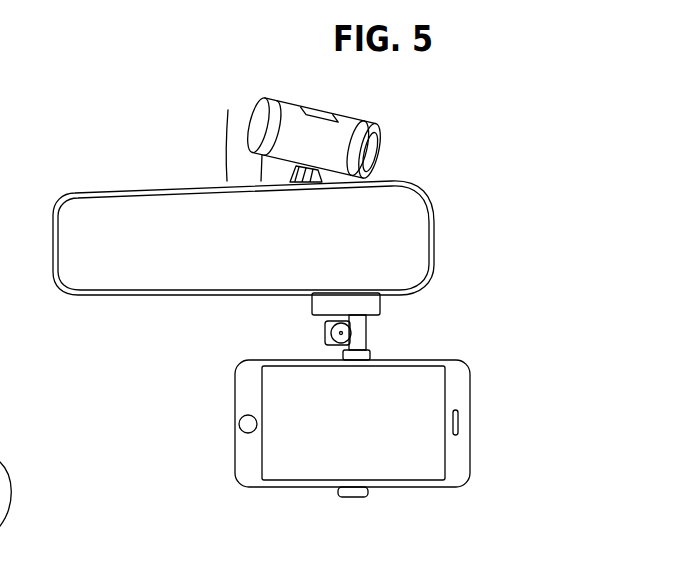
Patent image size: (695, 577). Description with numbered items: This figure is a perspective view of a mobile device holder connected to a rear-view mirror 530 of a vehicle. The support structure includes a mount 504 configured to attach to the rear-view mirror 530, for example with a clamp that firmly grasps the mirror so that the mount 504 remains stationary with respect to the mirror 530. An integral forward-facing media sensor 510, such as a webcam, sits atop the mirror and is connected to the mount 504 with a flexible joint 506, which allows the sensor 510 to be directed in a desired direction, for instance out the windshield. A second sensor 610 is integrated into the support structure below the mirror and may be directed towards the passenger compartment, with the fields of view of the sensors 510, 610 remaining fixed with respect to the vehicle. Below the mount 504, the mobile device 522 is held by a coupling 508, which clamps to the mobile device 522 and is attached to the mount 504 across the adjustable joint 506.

The forward-facing media sensor 510 is at (285, 117).
The rear-view mirror 530 is at (97, 222).
The mount 504 is at (380, 306).
The flexible joint 506 is at (380, 336).
The second sensor 610 is at (318, 330).
The mobile device 522 is at (240, 416).
The coupling 508 is at (366, 497).